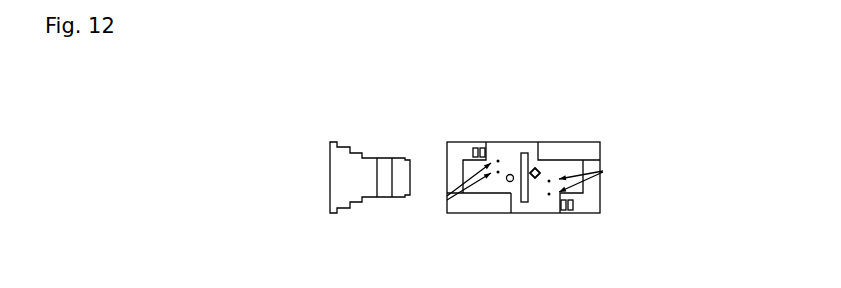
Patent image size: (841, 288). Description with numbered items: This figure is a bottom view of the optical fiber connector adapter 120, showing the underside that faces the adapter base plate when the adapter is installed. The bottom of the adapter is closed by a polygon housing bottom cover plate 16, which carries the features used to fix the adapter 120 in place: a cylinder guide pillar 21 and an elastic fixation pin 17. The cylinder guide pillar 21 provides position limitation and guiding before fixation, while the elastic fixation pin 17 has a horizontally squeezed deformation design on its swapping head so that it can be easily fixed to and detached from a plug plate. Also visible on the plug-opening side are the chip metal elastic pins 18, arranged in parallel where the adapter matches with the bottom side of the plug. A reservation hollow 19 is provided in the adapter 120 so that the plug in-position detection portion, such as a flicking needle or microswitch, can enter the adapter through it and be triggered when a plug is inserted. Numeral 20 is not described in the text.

The optical fiber connector adapter 120 is at (519, 165).
The bottom cover plate 16 is at (540, 208).
The elastic fixation pin 17 is at (482, 147).
The metal elastic pins 18 is at (447, 197).
The reservation hollow 19 is at (568, 158).
The valve slide 20 is at (524, 153).
The cylinder guide pillar 21 is at (536, 178).